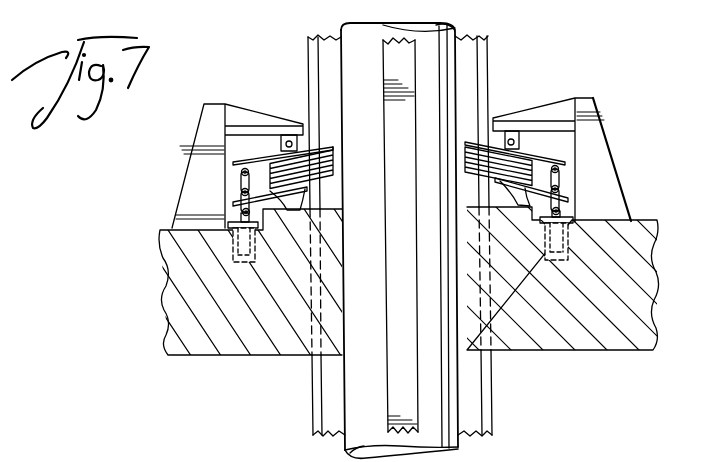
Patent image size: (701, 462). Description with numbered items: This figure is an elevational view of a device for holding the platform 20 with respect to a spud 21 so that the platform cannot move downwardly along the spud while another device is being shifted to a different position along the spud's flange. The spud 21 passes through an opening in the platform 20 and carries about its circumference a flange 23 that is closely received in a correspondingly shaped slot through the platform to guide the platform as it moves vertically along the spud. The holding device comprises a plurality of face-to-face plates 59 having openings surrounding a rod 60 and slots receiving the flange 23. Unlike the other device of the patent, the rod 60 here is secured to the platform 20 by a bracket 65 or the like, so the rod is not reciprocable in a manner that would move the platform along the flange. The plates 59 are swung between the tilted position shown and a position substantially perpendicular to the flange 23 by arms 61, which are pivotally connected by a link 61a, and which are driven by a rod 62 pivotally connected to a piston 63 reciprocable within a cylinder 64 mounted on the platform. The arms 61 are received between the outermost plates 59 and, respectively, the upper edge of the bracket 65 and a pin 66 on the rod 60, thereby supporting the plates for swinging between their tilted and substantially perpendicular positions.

The platform 20 is at (158, 298).
The spud 21 is at (338, 392).
The flange 23 is at (401, 163).
The plates 59 is at (339, 149).
The rod 60 is at (522, 134).
The arms 61 is at (565, 155).
The link 61a is at (561, 172).
The rod 62 is at (575, 240).
The piston 63 is at (232, 254).
The cylinder 64 is at (580, 223).
The bracket 65 is at (236, 194).
The pin 66 is at (514, 140).